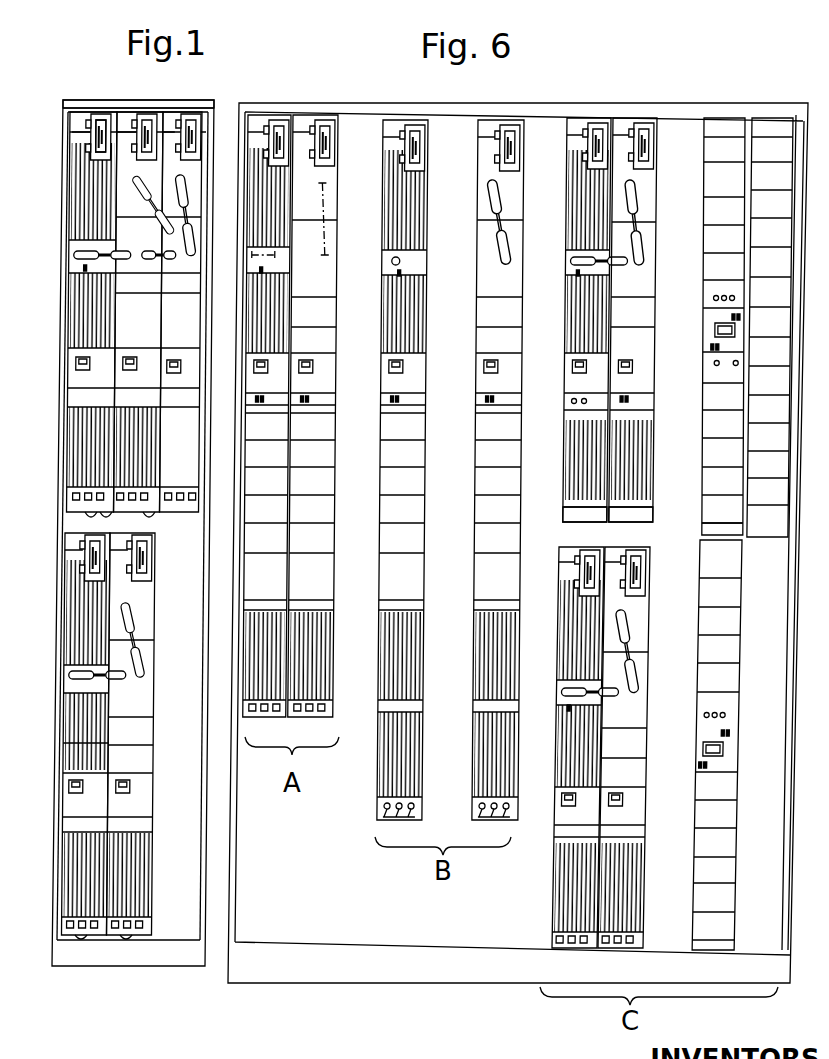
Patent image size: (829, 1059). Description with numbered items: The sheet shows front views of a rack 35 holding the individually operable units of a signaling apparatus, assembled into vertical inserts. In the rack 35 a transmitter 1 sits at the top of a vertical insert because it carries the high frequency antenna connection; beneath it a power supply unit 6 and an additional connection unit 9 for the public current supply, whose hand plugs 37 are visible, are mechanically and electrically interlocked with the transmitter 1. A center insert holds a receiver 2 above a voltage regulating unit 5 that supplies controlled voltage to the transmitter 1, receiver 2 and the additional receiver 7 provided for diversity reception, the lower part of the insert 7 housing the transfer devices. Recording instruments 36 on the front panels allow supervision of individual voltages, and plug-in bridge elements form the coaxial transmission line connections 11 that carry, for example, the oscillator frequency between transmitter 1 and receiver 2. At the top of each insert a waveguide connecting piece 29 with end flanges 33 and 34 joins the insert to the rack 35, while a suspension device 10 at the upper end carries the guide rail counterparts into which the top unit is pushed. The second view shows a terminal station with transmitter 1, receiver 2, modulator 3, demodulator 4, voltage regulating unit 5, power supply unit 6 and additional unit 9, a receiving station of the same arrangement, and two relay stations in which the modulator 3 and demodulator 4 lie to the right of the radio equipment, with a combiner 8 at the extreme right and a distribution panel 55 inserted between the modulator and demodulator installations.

In FIG. 1, the transmitter 1 is at (80, 288).
In FIG. 6, the transmitter 1 is at (272, 203).
In FIG. 1, the receiver 2 is at (120, 222).
In FIG. 6, the receiver 2 is at (330, 205).
In FIG. 6, the modulator 3 is at (722, 236).
In FIG. 6, the demodulator 4 is at (327, 517).
In FIG. 1, the voltage regulating unit 5 is at (132, 455).
In FIG. 6, the voltage regulating unit 5 is at (395, 667).
In FIG. 1, the power supply unit 6 is at (80, 427).
In FIG. 6, the power supply unit 6 is at (258, 656).
In FIG. 1, the additional receiver 7 is at (193, 280).
In FIG. 6, the combiner 8 is at (765, 176).
In FIG. 1, the additional connection unit 9 is at (75, 508).
In FIG. 6, the additional connection unit 9 is at (712, 531).
In FIG. 1, the suspension device 10 is at (77, 124).
In FIG. 1, the coaxial transmission line connection 11 is at (90, 251).
In FIG. 1, the waveguide connecting piece 29 is at (95, 138).
In FIG. 1, the flange 33 is at (77, 112).
In FIG. 1, the flange 34 is at (97, 152).
In FIG. 1, the rack 35 is at (105, 103).
In FIG. 1, the recording instrument 36 is at (77, 368).
In FIG. 1, the hand plug 37 is at (85, 523).
In FIG. 6, the distribution panel 55 is at (712, 330).